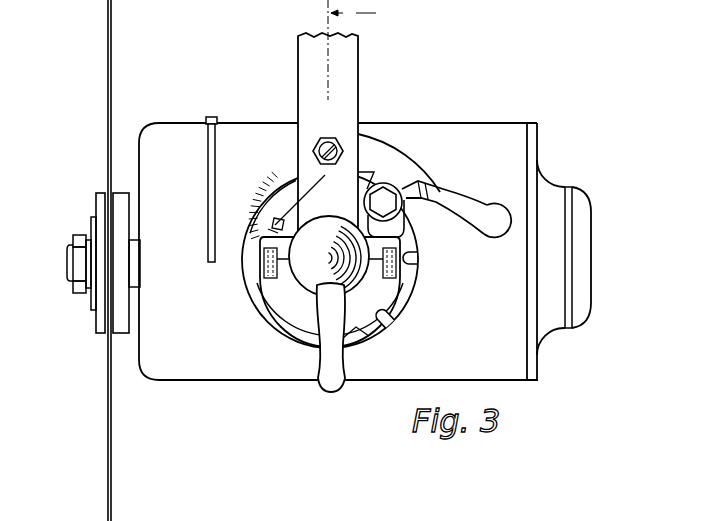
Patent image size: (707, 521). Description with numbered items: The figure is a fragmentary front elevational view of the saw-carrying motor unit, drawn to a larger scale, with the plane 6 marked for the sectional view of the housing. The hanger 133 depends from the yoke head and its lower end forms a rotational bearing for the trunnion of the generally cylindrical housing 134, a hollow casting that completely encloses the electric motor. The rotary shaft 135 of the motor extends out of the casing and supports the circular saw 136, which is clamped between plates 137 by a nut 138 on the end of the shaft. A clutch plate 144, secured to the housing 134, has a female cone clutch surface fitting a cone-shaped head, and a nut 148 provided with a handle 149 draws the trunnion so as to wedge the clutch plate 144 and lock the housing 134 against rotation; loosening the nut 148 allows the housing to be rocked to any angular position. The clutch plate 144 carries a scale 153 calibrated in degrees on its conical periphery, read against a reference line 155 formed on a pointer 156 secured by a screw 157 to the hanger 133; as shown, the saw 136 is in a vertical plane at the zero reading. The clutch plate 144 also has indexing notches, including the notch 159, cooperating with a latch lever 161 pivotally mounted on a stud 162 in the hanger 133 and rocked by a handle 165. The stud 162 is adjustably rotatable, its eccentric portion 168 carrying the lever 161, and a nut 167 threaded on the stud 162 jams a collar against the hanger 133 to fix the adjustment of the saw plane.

The plane of section 6 is at (352, 50).
The hanger 133 is at (300, 104).
The housing 134 is at (466, 131).
The rotary shaft 135 is at (133, 288).
The circular saw 136 is at (111, 70).
The plates 137 is at (118, 196).
The nut 138 is at (78, 236).
The clutch plate 144 is at (404, 305).
The nut 148 is at (312, 286).
The handle 149 is at (341, 372).
The scale 153 is at (272, 193).
The reference line 155 is at (272, 224).
The pointer 156 is at (276, 230).
The screw 157 is at (281, 227).
The indexing notch 159 is at (416, 260).
The latch lever 161 is at (389, 161).
The stud 162 is at (328, 137).
The handle 165 is at (458, 201).
The nut 167 is at (312, 152).
The eccentric portion 168 is at (392, 326).